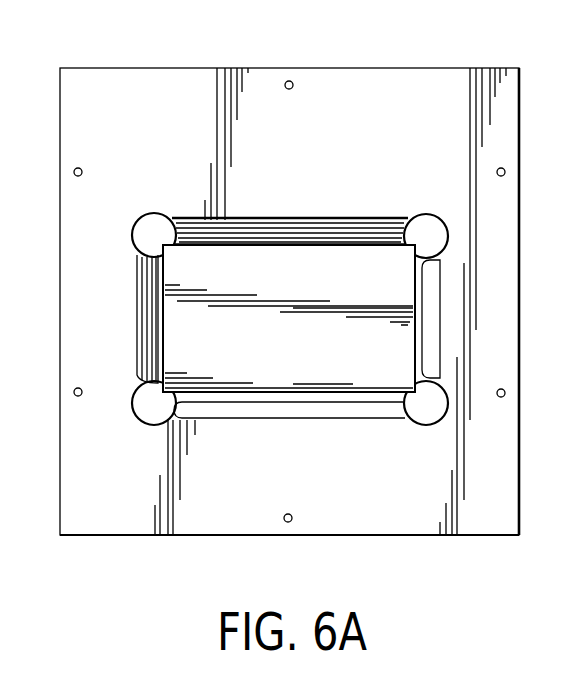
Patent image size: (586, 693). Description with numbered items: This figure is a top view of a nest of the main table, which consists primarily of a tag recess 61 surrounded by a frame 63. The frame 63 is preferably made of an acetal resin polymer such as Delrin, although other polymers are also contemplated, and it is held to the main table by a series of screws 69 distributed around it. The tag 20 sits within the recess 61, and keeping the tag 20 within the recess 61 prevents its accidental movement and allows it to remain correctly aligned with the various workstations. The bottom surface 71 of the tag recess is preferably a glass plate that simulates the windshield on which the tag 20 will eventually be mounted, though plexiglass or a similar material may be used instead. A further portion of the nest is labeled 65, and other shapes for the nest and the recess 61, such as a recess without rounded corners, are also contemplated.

The frame 63 is at (162, 180).
The screws 69 is at (290, 81).
The tag 20 is at (346, 268).
The tag recess 61 is at (163, 268).
The right side bar 65 is at (431, 336).
The bottom surface 71 is at (311, 401).